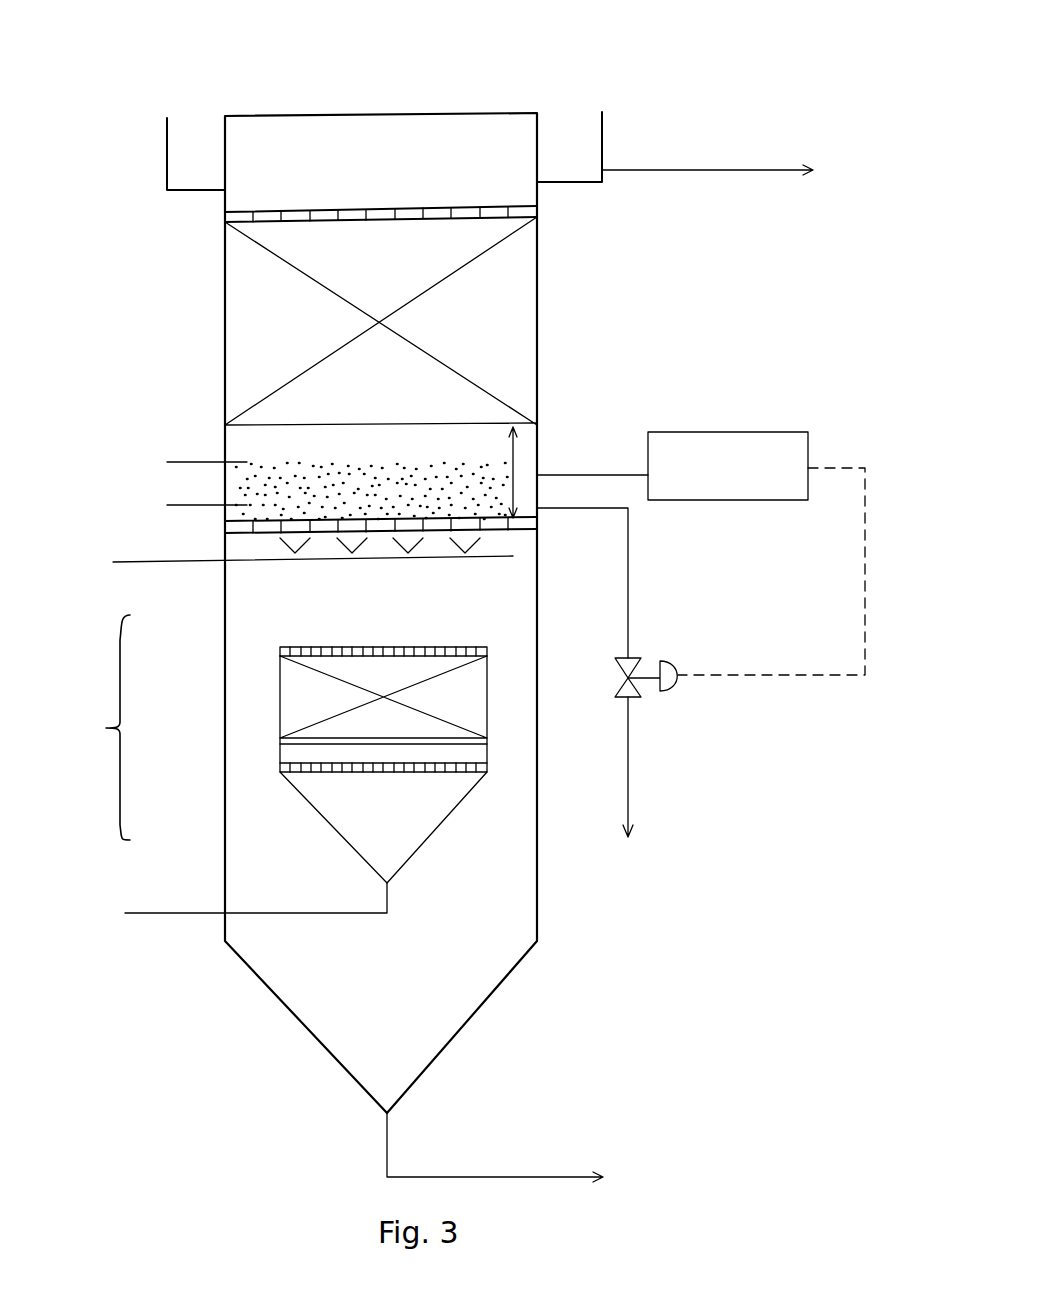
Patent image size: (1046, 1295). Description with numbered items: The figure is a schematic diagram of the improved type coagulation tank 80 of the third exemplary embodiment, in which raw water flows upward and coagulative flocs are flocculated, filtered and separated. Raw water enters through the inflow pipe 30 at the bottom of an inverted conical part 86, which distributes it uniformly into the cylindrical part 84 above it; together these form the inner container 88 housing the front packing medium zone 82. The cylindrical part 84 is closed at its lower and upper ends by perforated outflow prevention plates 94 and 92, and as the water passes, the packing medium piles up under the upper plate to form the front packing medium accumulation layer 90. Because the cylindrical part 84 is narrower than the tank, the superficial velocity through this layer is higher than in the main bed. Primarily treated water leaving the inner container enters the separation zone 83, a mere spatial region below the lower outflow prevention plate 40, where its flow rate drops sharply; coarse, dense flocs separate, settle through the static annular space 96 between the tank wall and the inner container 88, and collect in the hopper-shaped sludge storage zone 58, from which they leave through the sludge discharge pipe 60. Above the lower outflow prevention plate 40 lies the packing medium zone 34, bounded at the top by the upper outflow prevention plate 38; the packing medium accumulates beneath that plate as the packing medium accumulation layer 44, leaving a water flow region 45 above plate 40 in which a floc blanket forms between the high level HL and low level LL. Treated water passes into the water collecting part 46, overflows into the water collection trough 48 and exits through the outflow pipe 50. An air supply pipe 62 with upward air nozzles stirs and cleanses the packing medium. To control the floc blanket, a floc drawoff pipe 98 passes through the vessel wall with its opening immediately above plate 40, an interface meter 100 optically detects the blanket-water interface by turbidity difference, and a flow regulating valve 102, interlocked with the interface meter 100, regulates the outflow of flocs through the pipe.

The inflow pipe 30 is at (196, 913).
The packing medium zone 34 is at (398, 457).
The upper outflow prevention plate 38 is at (450, 222).
The lower outflow prevention plate 40 is at (232, 513).
The packing medium accumulation layer 44 is at (537, 338).
The water flow region 45 is at (537, 466).
The water collecting part 46 is at (447, 132).
The water collection trough 48 is at (602, 128).
The outflow pipe 50 is at (725, 170).
The sludge storage zone 58 is at (408, 1009).
The sludge discharge pipe 60 is at (502, 1177).
The air supply pipe 62 is at (148, 561).
The improved type coagulation tank 80 is at (730, 72).
The front packing medium zone 82 is at (415, 748).
The separation zone 83 is at (403, 603).
The cylindrical part 84 is at (280, 678).
The inverted conical part 86 is at (305, 805).
The inner container 88 is at (282, 749).
The front packing medium accumulation layer 90 is at (295, 708).
The upper outflow prevention plate of the cylindrical part 92 is at (280, 650).
The lower outflow prevention plate of the cylindrical part 94 is at (285, 775).
The annular space 96 is at (248, 738).
The floc drawoff pipe 98 is at (628, 585).
The interface meter 100 is at (760, 430).
The flow regulating valve 102 is at (638, 693).